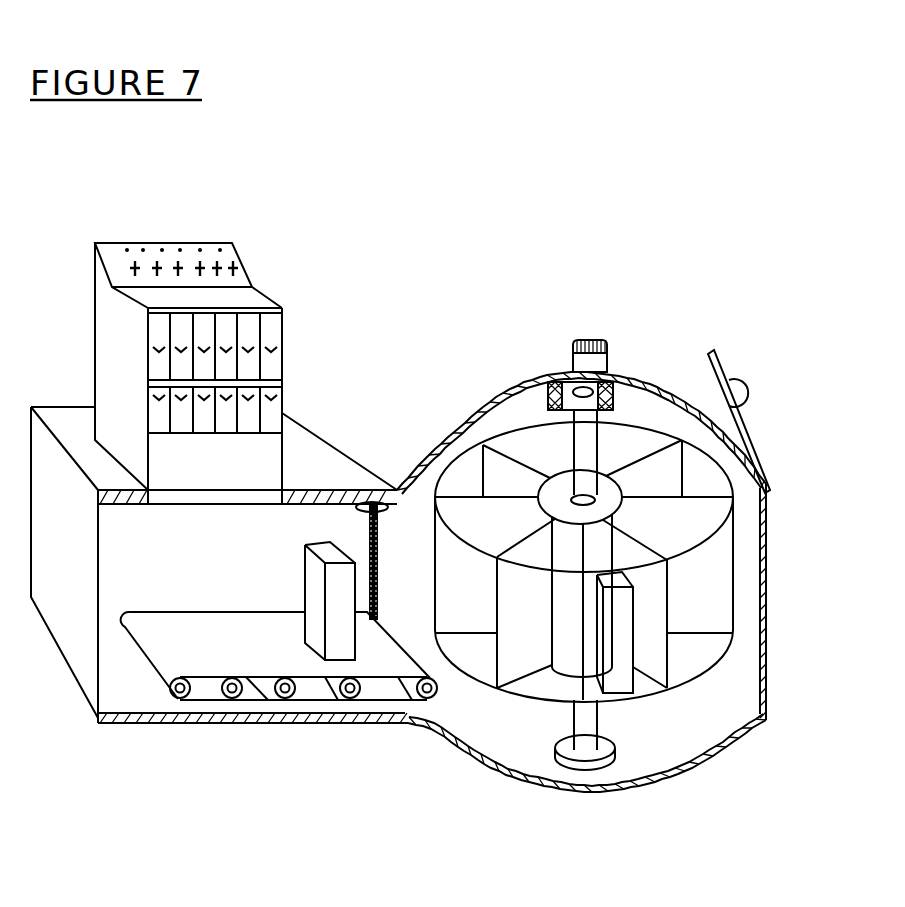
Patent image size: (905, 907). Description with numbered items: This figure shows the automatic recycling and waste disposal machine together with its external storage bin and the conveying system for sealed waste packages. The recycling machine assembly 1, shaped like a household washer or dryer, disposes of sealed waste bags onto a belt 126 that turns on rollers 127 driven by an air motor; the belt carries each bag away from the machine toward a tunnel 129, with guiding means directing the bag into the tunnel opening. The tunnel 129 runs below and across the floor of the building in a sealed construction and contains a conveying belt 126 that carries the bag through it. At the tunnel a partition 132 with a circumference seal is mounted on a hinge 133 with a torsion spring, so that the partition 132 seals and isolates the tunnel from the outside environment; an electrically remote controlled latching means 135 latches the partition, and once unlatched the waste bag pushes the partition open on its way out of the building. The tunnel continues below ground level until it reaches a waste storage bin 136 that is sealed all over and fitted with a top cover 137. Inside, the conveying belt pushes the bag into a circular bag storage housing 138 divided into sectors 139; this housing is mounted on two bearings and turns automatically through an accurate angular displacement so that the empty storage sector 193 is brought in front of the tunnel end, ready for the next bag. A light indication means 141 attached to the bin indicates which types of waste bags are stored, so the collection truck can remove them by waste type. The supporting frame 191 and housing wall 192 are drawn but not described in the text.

The recycling machine assembly 1 is at (268, 332).
The frame box 191 is at (98, 672).
The belt 126 is at (225, 643).
The rollers 127 is at (355, 700).
The tunnel 129 is at (363, 495).
The partition 132 is at (409, 476).
The hinge 133 is at (375, 500).
The latching means 135 is at (368, 550).
The waste storage bin 136 is at (643, 382).
The top cover 137 is at (740, 412).
The circular bag storage housing 138 is at (537, 380).
The sectors 139 is at (667, 673).
The light indication means 141 is at (602, 343).
The housing top wall 192 is at (562, 377).
The empty storage sector 193 is at (458, 600).